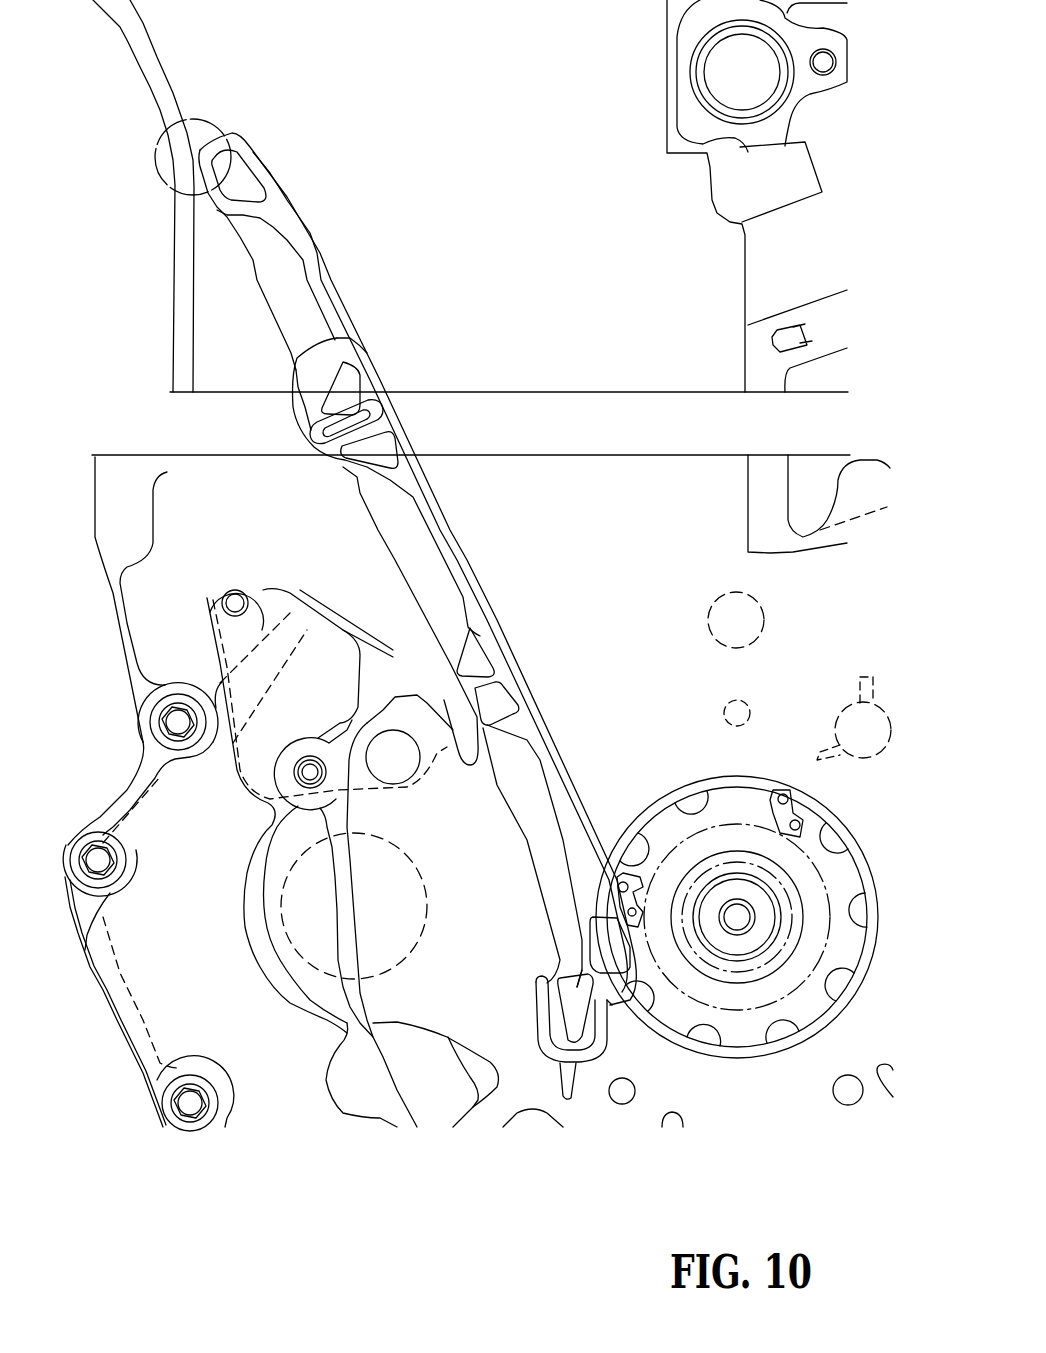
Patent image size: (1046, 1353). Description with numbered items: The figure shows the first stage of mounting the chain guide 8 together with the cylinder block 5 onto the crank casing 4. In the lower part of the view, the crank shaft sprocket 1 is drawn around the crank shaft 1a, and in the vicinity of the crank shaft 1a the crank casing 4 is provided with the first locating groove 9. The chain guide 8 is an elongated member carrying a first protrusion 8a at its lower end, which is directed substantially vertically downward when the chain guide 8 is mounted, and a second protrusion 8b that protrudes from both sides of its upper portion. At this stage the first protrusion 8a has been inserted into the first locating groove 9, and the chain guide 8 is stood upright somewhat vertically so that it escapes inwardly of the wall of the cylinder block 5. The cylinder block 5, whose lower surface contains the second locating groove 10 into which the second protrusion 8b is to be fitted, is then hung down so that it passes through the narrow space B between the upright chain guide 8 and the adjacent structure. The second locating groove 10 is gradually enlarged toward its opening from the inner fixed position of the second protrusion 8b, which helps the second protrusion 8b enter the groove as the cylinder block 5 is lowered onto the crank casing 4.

The crank shaft sprocket 1 is at (745, 998).
The crank shaft 1a is at (737, 916).
The crank casing 4 is at (103, 550).
The cylinder block 5 is at (172, 312).
The chain guide 8 is at (448, 540).
The first protrusion 8a is at (577, 1003).
The second protrusion 8b is at (322, 432).
The first locating groove 9 is at (602, 1042).
The second locating groove 10 is at (315, 357).
The narrow space B is at (157, 155).